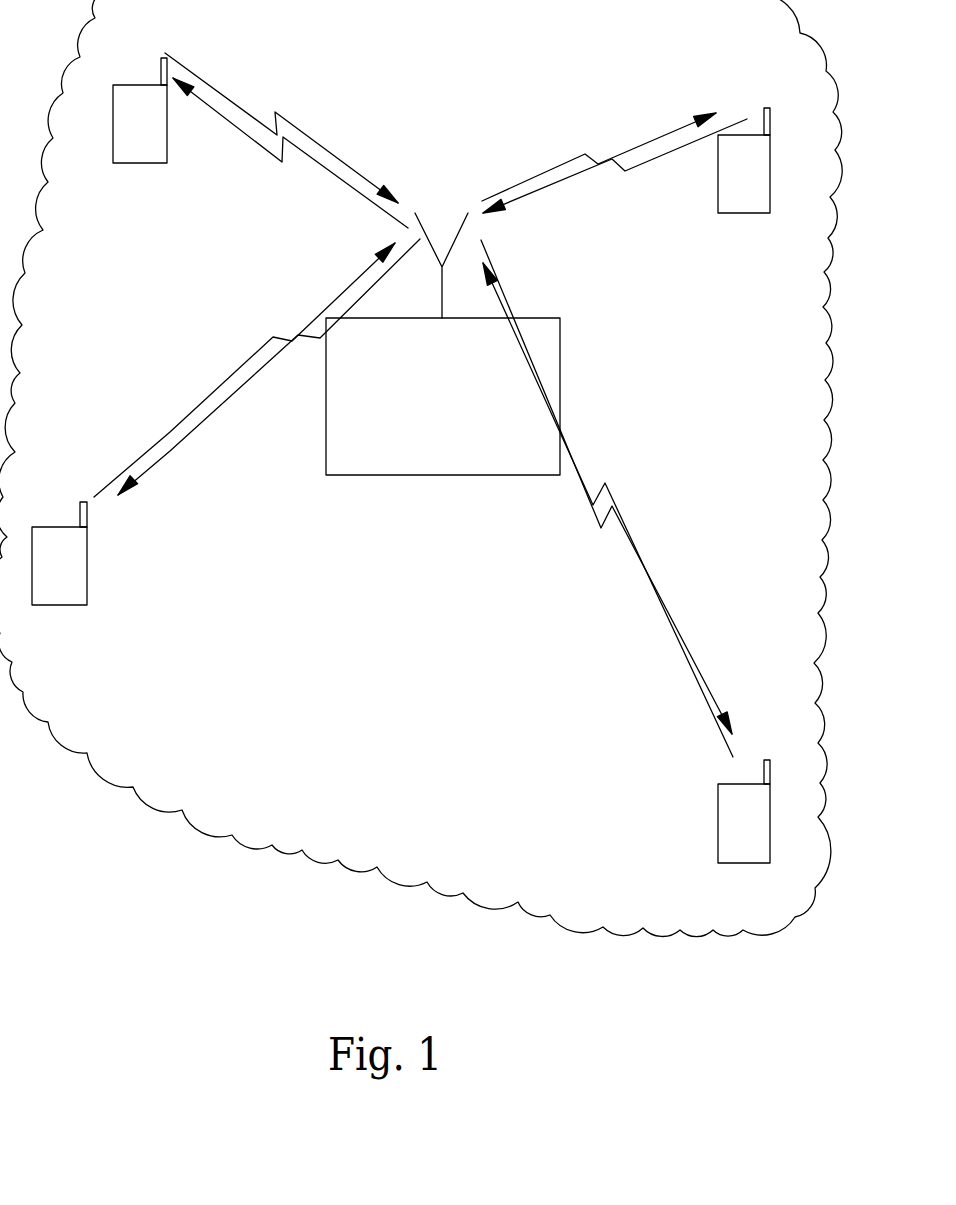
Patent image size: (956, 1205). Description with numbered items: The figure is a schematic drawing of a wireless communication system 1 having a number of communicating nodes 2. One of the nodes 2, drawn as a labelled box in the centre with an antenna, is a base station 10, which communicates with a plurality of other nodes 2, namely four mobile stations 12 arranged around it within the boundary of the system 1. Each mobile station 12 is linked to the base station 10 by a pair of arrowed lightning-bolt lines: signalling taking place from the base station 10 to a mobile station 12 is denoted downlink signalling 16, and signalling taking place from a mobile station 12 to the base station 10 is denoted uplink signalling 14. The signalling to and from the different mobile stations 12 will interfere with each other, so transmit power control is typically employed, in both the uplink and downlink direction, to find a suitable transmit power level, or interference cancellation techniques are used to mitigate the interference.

The wireless communication system 1 is at (157, 795).
The communicating node 2 is at (407, 460).
The base station 10 is at (443, 463).
The mobile station 12 is at (143, 150).
The uplink signalling 14 is at (337, 153).
The downlink signalling 16 is at (245, 130).